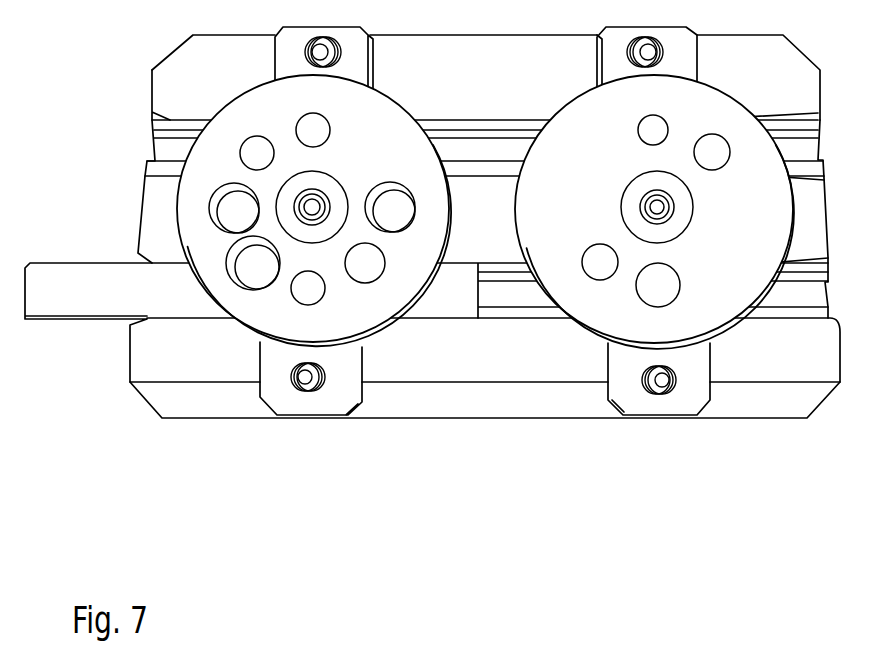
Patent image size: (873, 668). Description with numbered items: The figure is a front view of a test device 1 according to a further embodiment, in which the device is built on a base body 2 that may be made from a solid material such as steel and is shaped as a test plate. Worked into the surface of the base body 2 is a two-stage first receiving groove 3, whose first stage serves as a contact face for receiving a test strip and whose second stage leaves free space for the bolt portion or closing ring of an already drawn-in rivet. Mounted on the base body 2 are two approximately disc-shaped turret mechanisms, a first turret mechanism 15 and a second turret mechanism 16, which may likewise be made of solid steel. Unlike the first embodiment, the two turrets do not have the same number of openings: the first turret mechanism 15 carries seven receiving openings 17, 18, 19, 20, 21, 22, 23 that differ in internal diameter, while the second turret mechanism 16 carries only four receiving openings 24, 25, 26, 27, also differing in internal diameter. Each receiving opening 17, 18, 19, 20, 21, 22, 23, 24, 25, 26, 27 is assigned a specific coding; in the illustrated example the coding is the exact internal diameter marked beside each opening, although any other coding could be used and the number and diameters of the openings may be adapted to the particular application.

The test device 1 is at (96, 76).
The base body 2 is at (467, 405).
The first receiving groove 3 is at (800, 150).
The first turret mechanism 15 is at (347, 320).
The second turret mechanism 16 is at (713, 315).
The receiving opening 17 is at (304, 290).
The receiving opening 18 is at (255, 268).
The receiving opening 19 is at (232, 220).
The receiving opening 20 is at (255, 157).
The receiving opening 21 is at (320, 131).
The receiving opening 22 is at (400, 200).
The receiving opening 23 is at (363, 272).
The receiving opening 24 is at (670, 287).
The receiving opening 25 is at (598, 262).
The receiving opening 26 is at (650, 130).
The receiving opening 27 is at (714, 158).